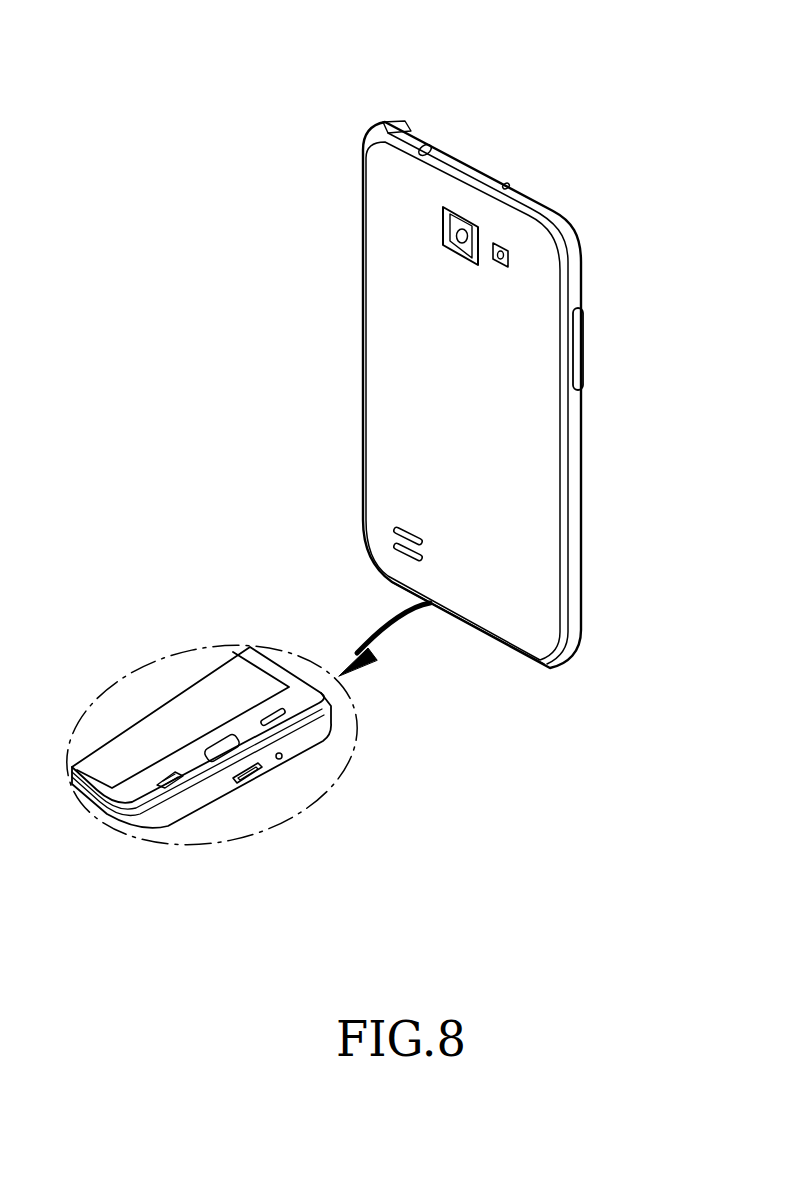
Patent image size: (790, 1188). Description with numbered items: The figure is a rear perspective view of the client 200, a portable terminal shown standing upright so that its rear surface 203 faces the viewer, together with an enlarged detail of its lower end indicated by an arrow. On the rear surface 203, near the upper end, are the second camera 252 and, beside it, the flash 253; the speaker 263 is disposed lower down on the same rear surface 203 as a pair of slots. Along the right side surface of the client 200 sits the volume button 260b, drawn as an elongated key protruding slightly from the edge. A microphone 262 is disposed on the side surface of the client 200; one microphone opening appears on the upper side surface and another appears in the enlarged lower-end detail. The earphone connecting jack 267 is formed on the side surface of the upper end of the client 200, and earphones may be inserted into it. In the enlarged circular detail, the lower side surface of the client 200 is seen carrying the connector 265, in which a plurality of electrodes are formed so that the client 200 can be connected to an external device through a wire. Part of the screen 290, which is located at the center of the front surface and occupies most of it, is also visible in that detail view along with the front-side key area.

The client 200 is at (364, 100).
The rear surface 203 is at (384, 379).
The second camera 252 is at (443, 225).
The flash 253 is at (510, 258).
The volume button 260b is at (584, 335).
The microphone 262 is at (508, 184).
The speaker 263 is at (390, 527).
The connector 265 is at (247, 782).
The earphone connecting jack 267 is at (430, 146).
The screen 290 is at (138, 708).